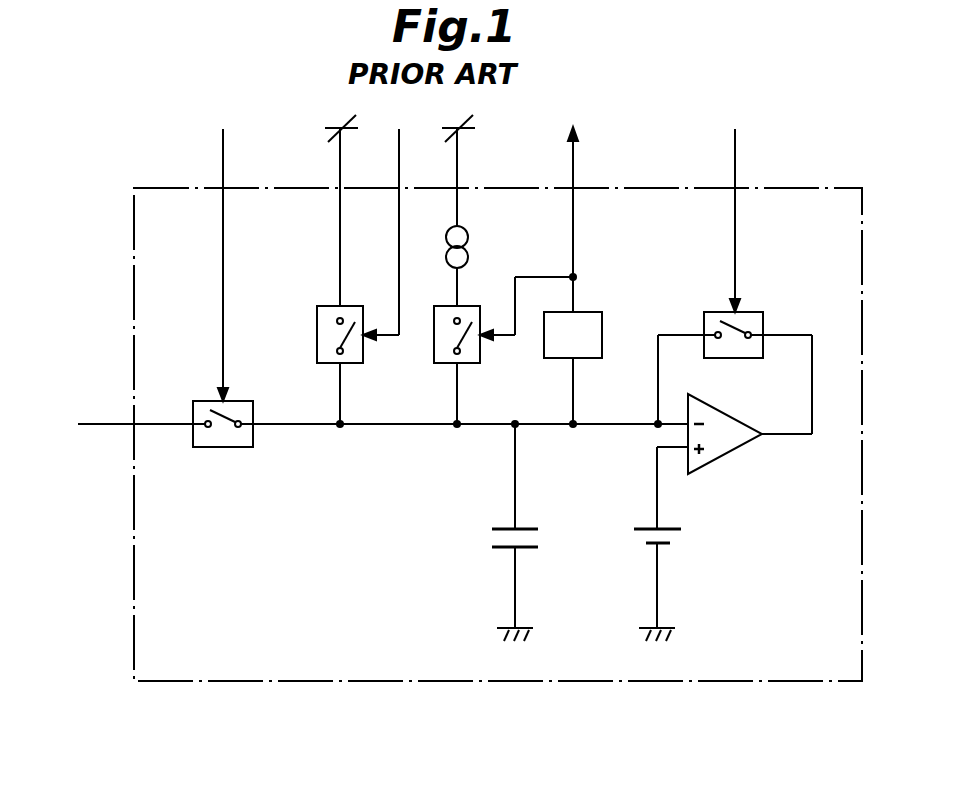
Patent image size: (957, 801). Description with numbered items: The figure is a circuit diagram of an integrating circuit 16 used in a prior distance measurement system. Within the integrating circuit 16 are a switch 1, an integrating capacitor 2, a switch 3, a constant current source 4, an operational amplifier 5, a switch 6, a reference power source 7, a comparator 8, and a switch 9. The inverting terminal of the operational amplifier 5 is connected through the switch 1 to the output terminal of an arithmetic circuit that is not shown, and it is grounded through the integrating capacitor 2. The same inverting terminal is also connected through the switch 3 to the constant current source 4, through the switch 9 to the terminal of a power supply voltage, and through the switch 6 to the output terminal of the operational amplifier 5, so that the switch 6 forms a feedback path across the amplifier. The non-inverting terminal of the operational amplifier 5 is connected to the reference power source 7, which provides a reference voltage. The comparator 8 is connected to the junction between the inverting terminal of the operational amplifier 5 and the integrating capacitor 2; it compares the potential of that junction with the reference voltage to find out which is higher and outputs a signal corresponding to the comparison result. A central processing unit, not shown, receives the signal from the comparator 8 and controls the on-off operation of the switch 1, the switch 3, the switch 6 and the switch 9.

The switch 1 is at (228, 450).
The integrating capacitor 2 is at (540, 540).
The switch 3 is at (433, 360).
The constant current source 4 is at (467, 233).
The operational amplifier 5 is at (718, 462).
The switch 6 is at (762, 312).
The reference power source 7 is at (686, 540).
The comparator 8 is at (598, 312).
The switch 9 is at (316, 356).
The integrating circuit 16 is at (798, 188).